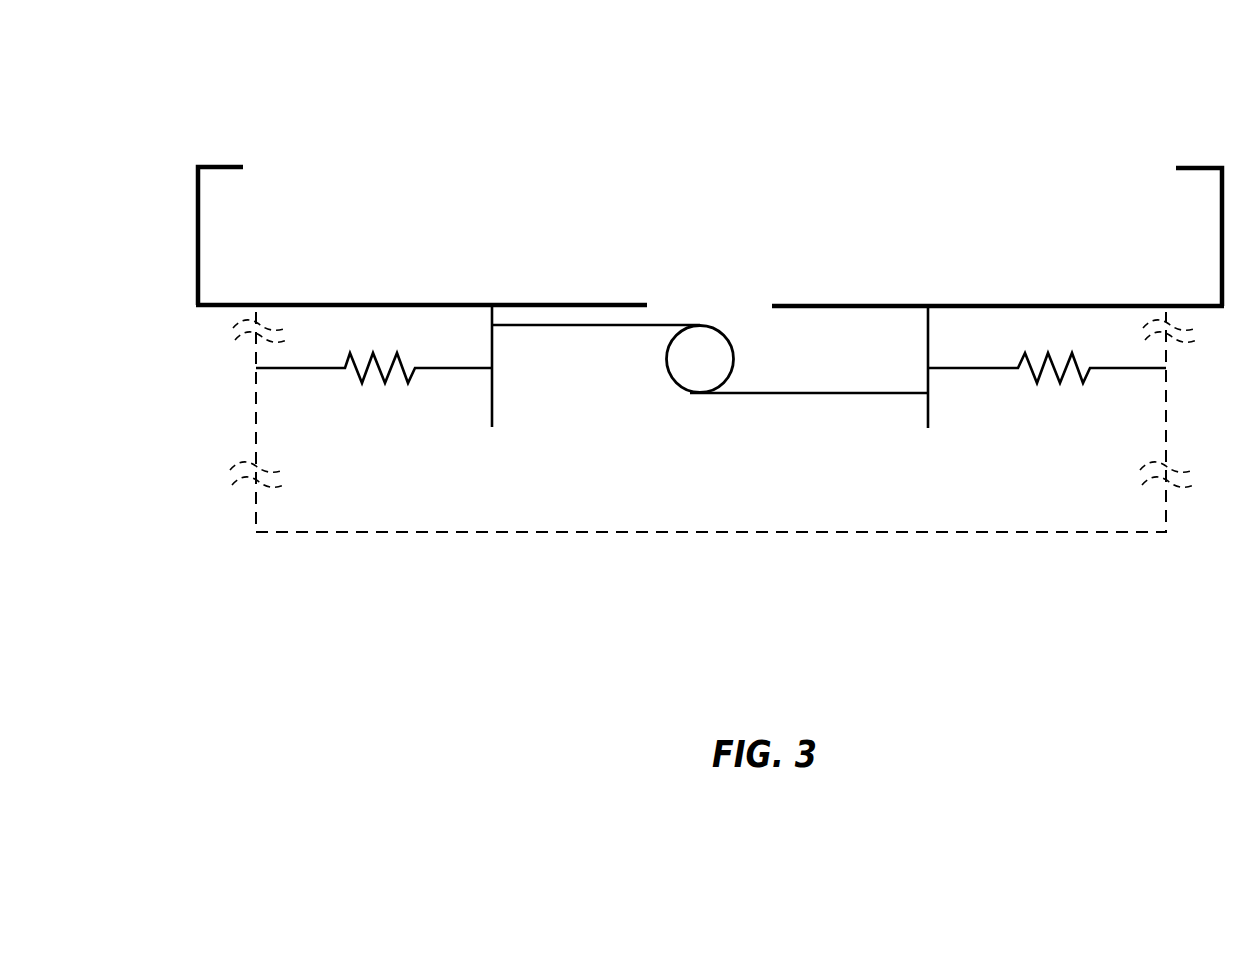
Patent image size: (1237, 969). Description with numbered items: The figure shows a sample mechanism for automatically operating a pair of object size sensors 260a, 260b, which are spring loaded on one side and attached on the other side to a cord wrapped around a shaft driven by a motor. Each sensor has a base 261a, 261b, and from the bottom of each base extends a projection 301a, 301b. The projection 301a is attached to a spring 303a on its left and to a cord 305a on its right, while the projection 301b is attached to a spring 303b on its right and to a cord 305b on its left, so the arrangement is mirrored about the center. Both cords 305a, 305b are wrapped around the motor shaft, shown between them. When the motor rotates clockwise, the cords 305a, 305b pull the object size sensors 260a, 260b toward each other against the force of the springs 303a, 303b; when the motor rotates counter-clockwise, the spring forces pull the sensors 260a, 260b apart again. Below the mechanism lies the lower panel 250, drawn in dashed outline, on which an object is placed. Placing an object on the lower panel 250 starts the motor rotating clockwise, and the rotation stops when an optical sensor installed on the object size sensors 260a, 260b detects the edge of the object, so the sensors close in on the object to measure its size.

The object size sensor 260a is at (262, 142).
The object size sensor 260b is at (1140, 141).
The base 261a is at (457, 303).
The base 261b is at (833, 304).
The projection 301a is at (489, 415).
The projection 301b is at (925, 413).
The spring 303a is at (355, 385).
The spring 303b is at (1048, 385).
The cord 305a is at (573, 328).
The cord 305b is at (828, 398).
The lower panel 250 is at (582, 532).